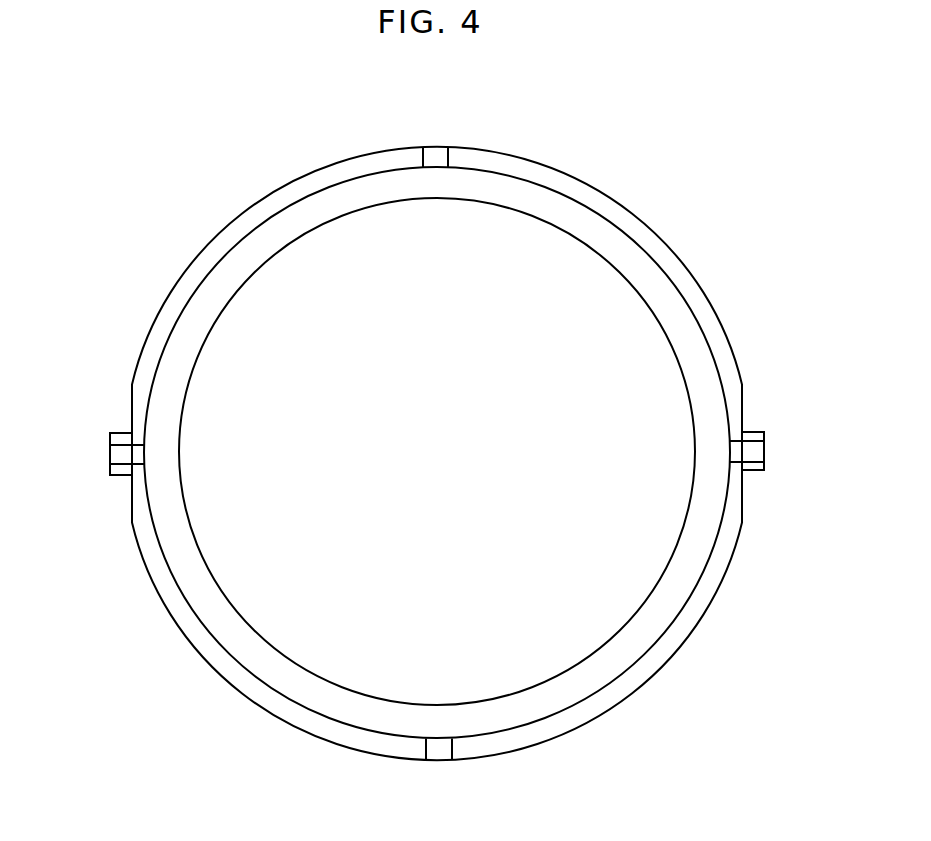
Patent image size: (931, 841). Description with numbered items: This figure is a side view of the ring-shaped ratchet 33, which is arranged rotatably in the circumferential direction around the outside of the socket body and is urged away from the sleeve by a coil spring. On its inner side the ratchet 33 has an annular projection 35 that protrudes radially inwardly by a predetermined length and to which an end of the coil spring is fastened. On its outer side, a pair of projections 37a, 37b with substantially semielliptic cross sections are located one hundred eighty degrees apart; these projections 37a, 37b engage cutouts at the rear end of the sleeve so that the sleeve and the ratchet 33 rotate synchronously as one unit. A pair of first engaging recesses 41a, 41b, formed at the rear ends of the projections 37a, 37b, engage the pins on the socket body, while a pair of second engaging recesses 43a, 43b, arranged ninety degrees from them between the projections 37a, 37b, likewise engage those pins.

The ratchet 33 is at (702, 192).
The annular projection 35 is at (170, 401).
The projection 37a is at (115, 477).
The projection 37b is at (750, 472).
The first engaging recess 41a is at (112, 445).
The first engaging recess 41b is at (748, 450).
The second engaging recess 43a is at (448, 150).
The second engaging recess 43b is at (428, 747).